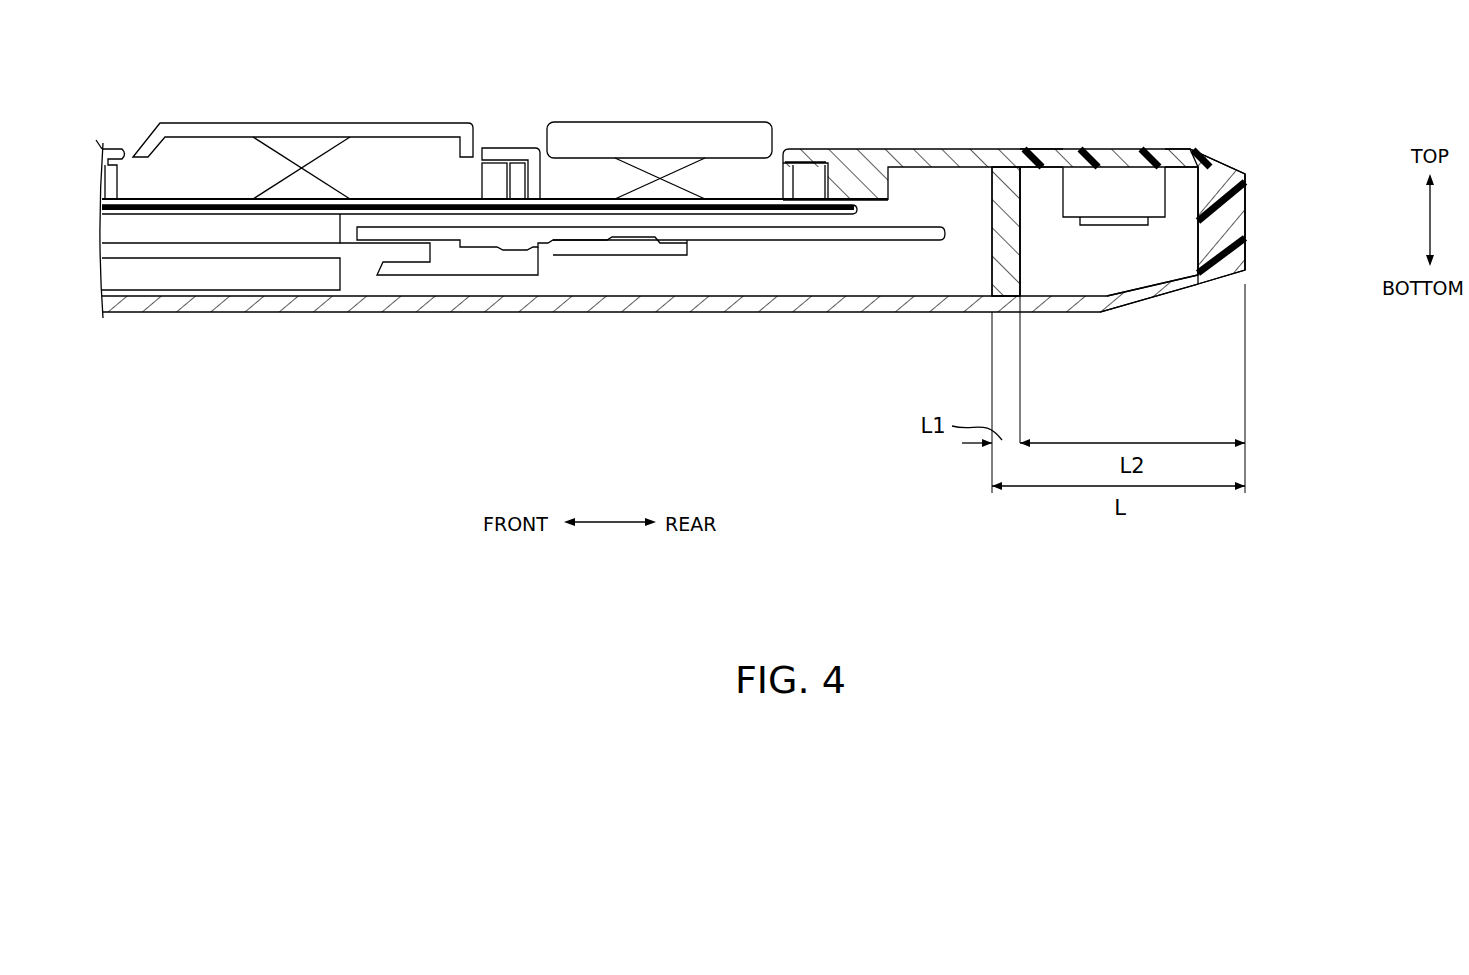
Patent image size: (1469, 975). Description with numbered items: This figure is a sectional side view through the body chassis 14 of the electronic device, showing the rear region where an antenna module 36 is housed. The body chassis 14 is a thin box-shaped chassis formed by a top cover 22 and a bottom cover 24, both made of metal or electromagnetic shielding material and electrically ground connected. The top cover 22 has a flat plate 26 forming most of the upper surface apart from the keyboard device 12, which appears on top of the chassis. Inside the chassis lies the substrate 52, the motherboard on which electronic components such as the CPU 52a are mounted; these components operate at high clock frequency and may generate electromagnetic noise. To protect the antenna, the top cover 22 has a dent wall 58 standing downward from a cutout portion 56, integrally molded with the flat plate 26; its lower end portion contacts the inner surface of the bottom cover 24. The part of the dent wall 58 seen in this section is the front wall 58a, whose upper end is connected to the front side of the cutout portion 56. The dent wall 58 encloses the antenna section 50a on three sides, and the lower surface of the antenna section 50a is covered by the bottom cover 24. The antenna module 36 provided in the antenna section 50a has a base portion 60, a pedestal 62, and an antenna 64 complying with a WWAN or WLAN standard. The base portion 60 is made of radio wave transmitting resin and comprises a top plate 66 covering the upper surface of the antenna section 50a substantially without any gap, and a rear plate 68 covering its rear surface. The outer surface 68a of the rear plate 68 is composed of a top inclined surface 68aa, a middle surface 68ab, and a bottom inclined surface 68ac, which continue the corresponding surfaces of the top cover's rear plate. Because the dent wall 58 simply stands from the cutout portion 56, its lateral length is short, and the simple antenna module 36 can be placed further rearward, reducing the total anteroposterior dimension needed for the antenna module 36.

The keyboard device 12 is at (653, 94).
The body chassis 14 is at (317, 94).
The top cover 22 is at (810, 148).
The bottom cover 24 is at (957, 313).
The flat plate 26 is at (1014, 195).
The antenna module 36 is at (1114, 326).
The antenna section 50a is at (1048, 253).
The substrate 52 is at (515, 237).
The CPU 52a is at (627, 248).
The cutout portion 56 is at (1024, 152).
The dent wall 58 is at (998, 227).
The front wall 58a is at (993, 171).
The base portion 60 is at (1275, 150).
The pedestal 62 is at (1127, 188).
The antenna 64 is at (1088, 220).
The top plate 66 is at (1166, 149).
The rear plate 68 is at (1296, 170).
The outer surface 68a is at (1298, 221).
The top inclined surface 68aa is at (1264, 265).
The middle surface 68ab is at (1247, 216).
The bottom inclined surface 68ac is at (1230, 162).